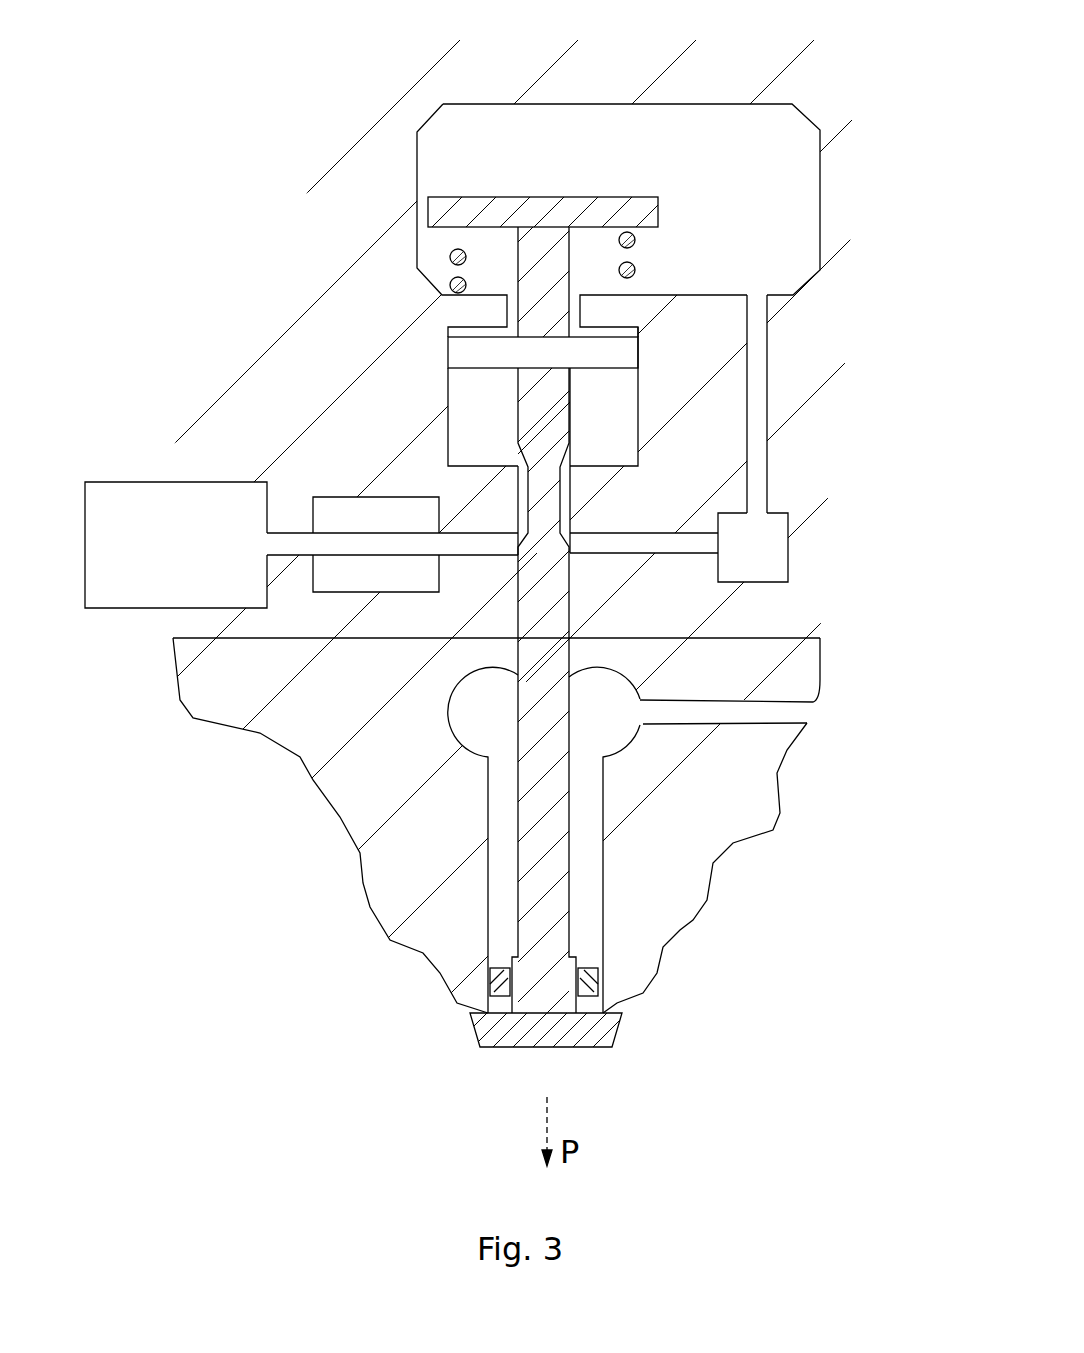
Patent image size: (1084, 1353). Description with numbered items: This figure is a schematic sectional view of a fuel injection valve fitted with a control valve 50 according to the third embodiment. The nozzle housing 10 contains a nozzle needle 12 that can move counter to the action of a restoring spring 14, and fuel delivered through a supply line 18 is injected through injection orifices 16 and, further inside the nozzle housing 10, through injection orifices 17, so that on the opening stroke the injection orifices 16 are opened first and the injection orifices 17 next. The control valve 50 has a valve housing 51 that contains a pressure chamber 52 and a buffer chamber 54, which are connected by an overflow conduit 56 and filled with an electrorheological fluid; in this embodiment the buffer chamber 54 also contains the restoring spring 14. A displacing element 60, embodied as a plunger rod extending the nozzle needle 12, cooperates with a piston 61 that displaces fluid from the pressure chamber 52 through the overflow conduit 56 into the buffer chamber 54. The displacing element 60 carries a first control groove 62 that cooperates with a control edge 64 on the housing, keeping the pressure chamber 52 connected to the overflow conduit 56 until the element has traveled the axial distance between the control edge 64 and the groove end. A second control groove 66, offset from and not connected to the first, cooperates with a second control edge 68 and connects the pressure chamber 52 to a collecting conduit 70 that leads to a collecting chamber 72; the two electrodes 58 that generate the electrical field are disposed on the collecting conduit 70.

The nozzle housing 10 is at (677, 852).
The nozzle needle 12 is at (542, 873).
The restoring spring 14 is at (635, 268).
The injection orifices 16 is at (497, 1000).
The injection orifices 17 is at (493, 997).
The supply line 18 is at (770, 712).
The control valve 50 is at (400, 428).
The valve housing 51 is at (652, 606).
The pressure chamber 52 is at (613, 392).
The buffer chamber 54 is at (790, 207).
The overflow conduit 56 is at (757, 442).
The electrodes 58 is at (400, 517).
The displacing element 60 is at (547, 418).
The piston 61 is at (465, 355).
The first control groove 62 is at (560, 515).
The control edge 64 is at (572, 470).
The second control groove 66 is at (517, 520).
The second control edge 68 is at (514, 468).
The collecting conduit 70 is at (343, 542).
The collecting chamber 72 is at (140, 510).